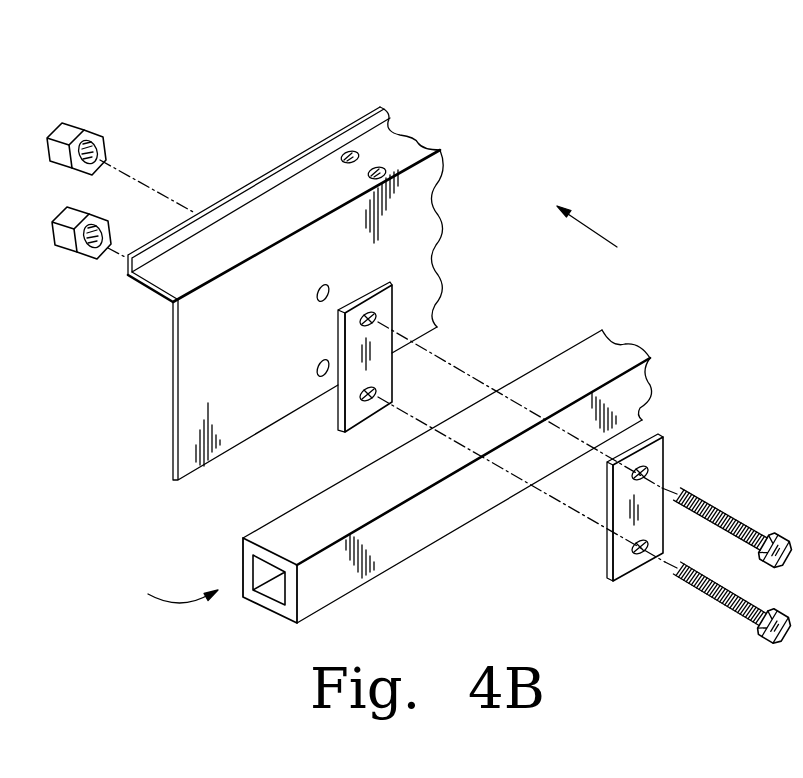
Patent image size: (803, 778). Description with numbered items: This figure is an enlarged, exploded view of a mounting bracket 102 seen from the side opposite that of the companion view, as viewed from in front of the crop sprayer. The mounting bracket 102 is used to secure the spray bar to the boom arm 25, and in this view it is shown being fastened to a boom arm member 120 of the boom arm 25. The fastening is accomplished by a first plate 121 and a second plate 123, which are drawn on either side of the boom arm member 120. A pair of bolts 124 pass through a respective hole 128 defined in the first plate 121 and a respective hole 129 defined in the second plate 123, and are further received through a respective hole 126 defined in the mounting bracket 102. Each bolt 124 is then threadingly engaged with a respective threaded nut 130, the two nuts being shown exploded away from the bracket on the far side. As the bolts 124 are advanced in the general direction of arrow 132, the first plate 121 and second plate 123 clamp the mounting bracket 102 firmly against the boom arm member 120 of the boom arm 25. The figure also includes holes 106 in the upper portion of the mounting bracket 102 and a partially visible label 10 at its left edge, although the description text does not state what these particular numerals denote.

The mounting bracket 102 is at (417, 238).
The holes in plate 106 is at (358, 152).
The hole 126 is at (317, 290).
The second plate 123 is at (393, 362).
The hole 129 is at (375, 318).
The boom arm member 120 is at (277, 535).
The first plate 121 is at (658, 437).
The hole 128 is at (650, 476).
The bolt 124 is at (777, 538).
The threaded nut 130 is at (88, 124).
The arrow 132 is at (600, 235).
The boom arm 25 is at (167, 591).
The apparatus 10 is at (11, 450).